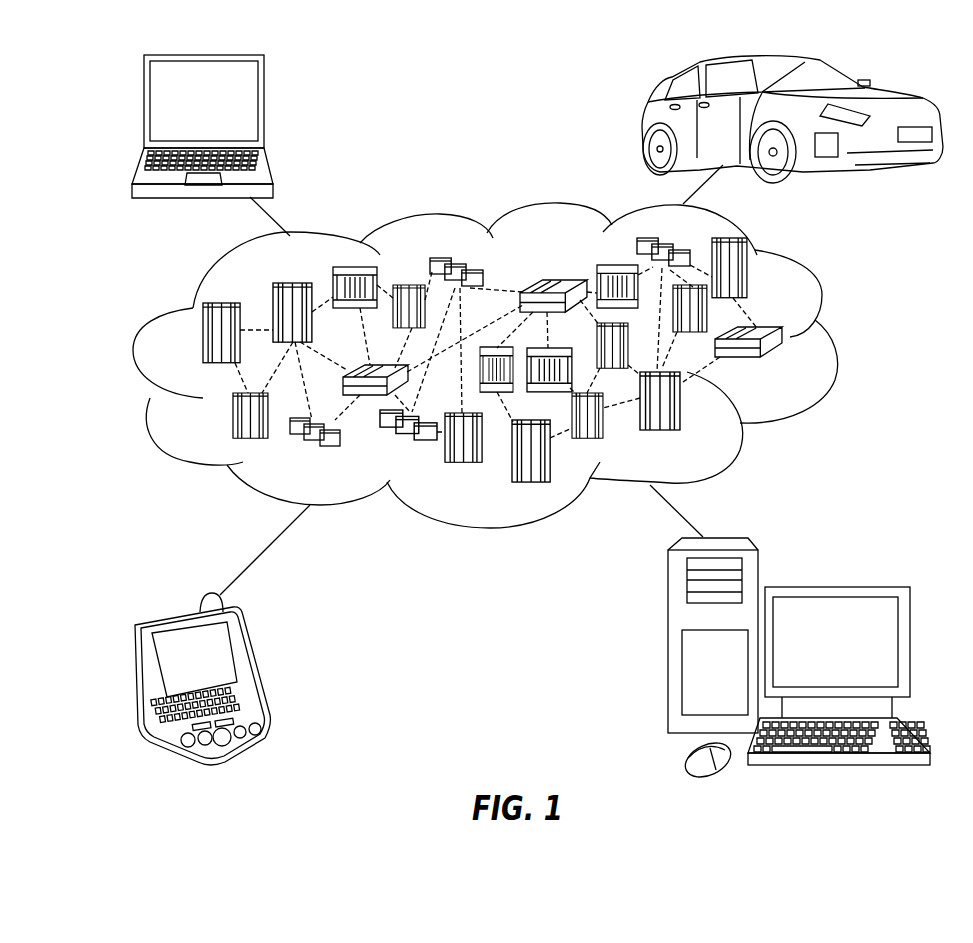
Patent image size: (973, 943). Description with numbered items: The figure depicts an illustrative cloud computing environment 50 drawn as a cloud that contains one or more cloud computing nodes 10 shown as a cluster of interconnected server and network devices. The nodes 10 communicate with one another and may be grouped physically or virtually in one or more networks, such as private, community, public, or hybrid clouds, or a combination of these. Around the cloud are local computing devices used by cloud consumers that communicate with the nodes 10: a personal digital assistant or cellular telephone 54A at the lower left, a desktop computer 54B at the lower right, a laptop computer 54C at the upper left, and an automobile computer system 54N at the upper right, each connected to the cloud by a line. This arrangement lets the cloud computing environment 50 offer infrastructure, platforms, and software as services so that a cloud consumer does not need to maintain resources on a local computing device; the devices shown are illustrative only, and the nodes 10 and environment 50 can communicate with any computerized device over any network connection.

The cloud computing nodes 10 is at (783, 365).
The cloud computing environment 50 is at (838, 340).
The personal digital assistant (PDA) or cellular telephone 54A is at (257, 667).
The desktop computer 54B is at (833, 585).
The laptop computer 54C is at (264, 106).
The automobile computer system 54N is at (643, 121).